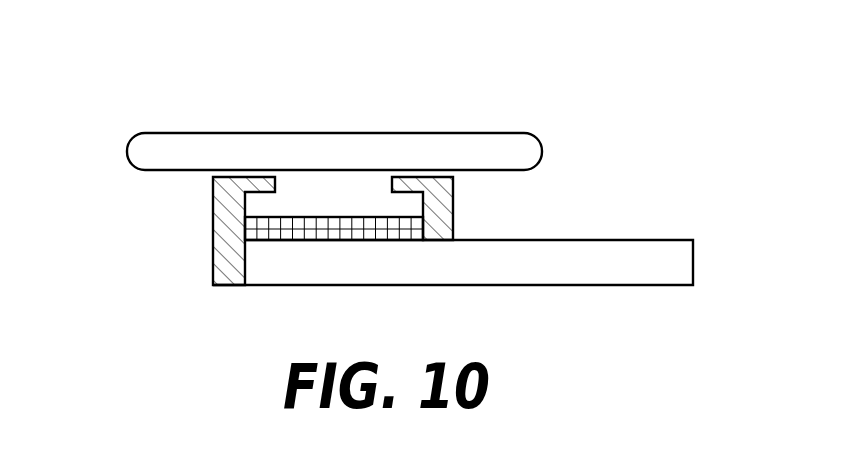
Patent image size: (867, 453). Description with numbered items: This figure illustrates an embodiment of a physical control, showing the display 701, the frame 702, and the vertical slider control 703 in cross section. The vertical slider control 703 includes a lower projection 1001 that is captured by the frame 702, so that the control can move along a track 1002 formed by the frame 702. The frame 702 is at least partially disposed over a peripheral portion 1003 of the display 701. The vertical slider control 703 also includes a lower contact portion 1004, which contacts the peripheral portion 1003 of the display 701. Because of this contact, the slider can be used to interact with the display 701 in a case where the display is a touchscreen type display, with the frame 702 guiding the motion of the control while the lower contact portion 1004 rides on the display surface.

The display 701 is at (622, 238).
The frame 702 is at (213, 228).
The vertical slider control 703 is at (432, 133).
The lower projection 1001 is at (284, 192).
The track 1002 is at (220, 195).
The peripheral portion 1003 is at (275, 268).
The lower contact portion 1004 is at (427, 225).